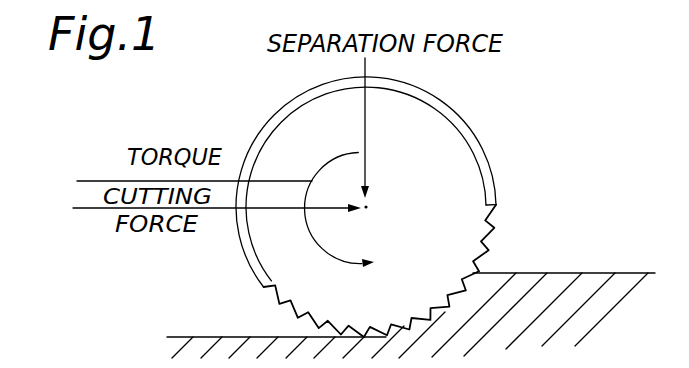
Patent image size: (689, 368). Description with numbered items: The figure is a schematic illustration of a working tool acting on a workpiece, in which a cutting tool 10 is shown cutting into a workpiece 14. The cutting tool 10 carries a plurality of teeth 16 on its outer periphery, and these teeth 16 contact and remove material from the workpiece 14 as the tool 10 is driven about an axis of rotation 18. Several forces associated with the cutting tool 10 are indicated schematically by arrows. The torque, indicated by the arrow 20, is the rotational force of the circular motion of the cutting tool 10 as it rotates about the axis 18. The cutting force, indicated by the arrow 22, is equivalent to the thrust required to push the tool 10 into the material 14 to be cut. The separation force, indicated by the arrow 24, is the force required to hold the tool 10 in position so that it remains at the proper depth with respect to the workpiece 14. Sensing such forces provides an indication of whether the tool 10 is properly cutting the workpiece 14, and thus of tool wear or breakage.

The cutting tool 10 is at (448, 135).
The workpiece 14 is at (553, 273).
The teeth 16 is at (487, 230).
The axis of rotation 18 is at (336, 213).
The torque arrow 20 is at (327, 168).
The cutting force arrow 22 is at (93, 210).
The separation force arrow 24 is at (368, 122).